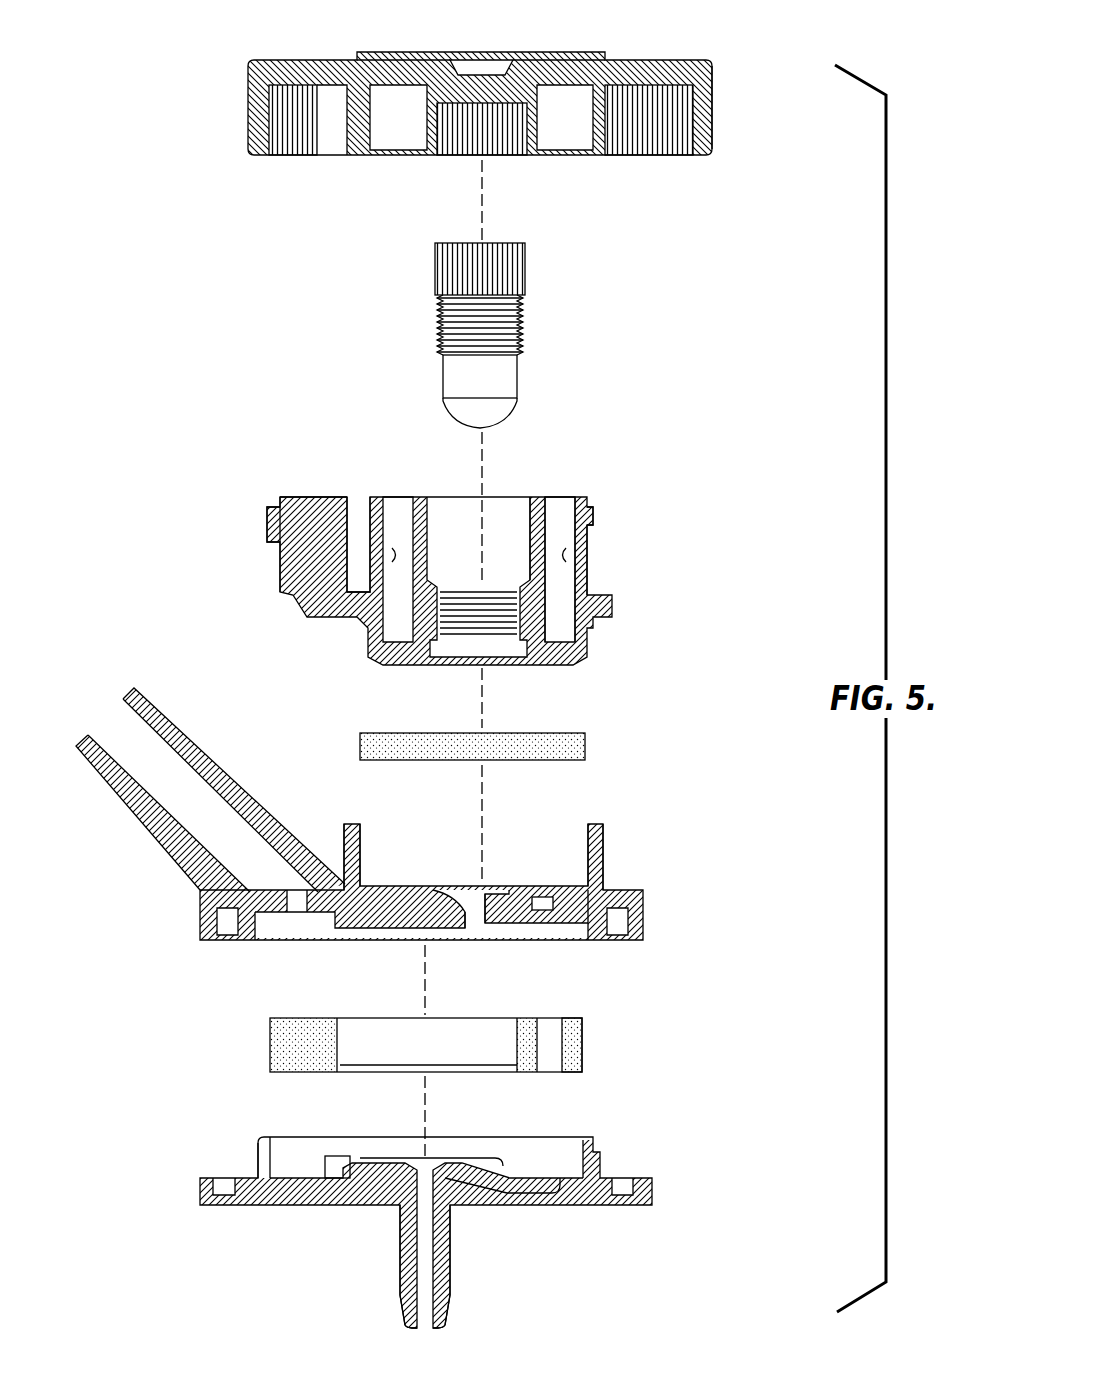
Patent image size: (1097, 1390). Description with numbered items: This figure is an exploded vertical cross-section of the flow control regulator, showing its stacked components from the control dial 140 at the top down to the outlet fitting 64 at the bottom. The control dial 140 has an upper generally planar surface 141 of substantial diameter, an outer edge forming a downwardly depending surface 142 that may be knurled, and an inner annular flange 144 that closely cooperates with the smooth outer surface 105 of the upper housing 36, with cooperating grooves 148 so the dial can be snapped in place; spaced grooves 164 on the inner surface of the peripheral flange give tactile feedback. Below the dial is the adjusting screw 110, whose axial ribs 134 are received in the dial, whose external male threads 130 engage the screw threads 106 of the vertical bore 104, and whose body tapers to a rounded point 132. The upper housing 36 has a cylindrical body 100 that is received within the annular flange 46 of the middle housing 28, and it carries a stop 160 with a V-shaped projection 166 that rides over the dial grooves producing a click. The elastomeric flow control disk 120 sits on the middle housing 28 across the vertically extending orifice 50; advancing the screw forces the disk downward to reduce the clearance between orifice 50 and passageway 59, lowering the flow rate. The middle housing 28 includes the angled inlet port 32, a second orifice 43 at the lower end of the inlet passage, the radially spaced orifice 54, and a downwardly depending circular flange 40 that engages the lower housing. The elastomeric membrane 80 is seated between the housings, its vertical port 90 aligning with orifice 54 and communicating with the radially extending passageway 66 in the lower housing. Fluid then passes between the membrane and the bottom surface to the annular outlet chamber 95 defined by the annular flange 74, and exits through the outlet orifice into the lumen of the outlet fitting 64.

The control dial 140 is at (509, 111).
The upper planar surface 141 is at (306, 62).
The downwardly depending surface 142 is at (712, 136).
The inner annular flange 144 is at (310, 152).
The cooperating grooves 148 is at (470, 140).
The spaced grooves 164 is at (640, 150).
The axial ribs 134 is at (522, 262).
The external male threads 130 is at (523, 316).
The adjusting screw 110 is at (518, 380).
The cylindrical body 100 is at (430, 551).
The screw threads 106 is at (440, 578).
The vertical bore 104 is at (530, 525).
The smooth outer surface 105 is at (587, 545).
The upper housing 36 is at (587, 568).
The stop 160 is at (293, 512).
The V-shaped projection 166 is at (267, 522).
The elastomeric flow control disk 120 is at (585, 750).
The rounded point 132 is at (173, 713).
The annular flange 46 is at (603, 840).
The middle housing 28 is at (453, 891).
The passageway 59 is at (525, 900).
The second orifice 43 is at (283, 912).
The vertically extending orifice 50 is at (477, 923).
The orifice 54 is at (543, 905).
The circular flange 40 is at (603, 937).
The elastomeric membrane 80 is at (473, 1066).
The vertical port 90 is at (560, 1060).
The inlet port 32 is at (466, 1205).
The annular flange 74 is at (255, 1172).
The annular outlet chamber 95 is at (302, 1170).
The radially extending passageway 66 is at (547, 1190).
The outlet fitting 64 is at (402, 1268).